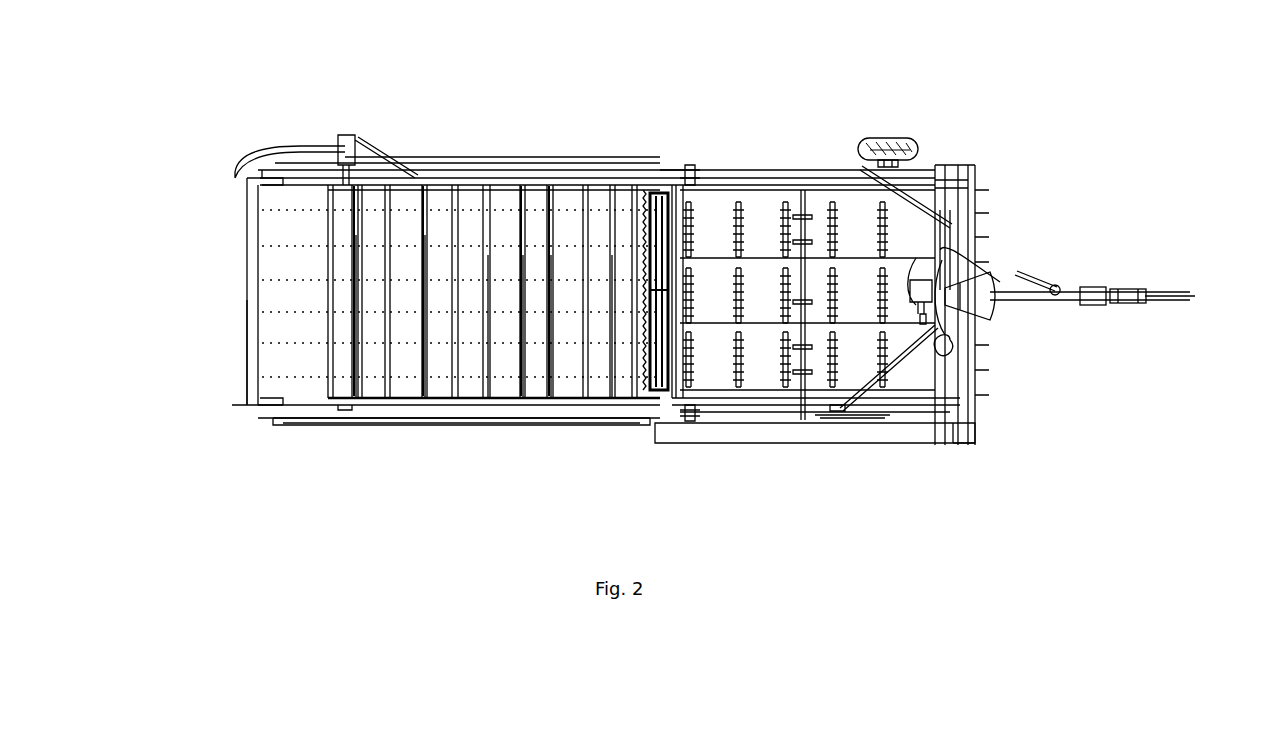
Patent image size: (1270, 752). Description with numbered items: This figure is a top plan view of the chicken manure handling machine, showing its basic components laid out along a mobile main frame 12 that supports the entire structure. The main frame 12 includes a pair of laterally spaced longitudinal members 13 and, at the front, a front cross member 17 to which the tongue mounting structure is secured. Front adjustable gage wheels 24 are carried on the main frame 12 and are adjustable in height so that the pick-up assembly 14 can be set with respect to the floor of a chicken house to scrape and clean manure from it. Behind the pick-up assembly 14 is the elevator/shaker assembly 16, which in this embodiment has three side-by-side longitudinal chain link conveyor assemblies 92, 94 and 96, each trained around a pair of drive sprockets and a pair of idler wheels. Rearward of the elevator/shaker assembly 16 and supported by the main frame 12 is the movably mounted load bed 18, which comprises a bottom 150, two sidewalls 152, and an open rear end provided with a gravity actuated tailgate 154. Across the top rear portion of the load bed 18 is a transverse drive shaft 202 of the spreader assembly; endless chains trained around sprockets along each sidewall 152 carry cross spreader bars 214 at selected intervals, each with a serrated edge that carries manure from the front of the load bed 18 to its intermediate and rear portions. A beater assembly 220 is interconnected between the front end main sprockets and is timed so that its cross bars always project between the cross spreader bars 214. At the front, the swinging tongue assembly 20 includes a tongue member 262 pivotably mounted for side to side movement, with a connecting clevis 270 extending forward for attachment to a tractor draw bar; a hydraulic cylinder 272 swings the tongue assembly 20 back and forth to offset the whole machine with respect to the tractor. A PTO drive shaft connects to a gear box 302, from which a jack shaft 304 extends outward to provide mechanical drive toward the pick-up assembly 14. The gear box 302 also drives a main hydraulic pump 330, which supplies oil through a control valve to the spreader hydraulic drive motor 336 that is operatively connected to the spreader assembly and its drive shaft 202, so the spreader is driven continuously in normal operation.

The main frame structure 12 is at (401, 281).
The longitudinal members 13 is at (797, 180).
The pick-up assembly 14 is at (993, 407).
The elevator/shaker assembly 16 is at (815, 305).
The front cross member 17 is at (945, 372).
The load bed 18 is at (510, 150).
The front swinging tongue assembly 20 is at (1106, 298).
The front adjustable gage wheels 24 is at (875, 140).
The chain link conveyor assembly 92 is at (758, 235).
The chain link conveyor assembly 94 is at (768, 305).
The chain link conveyor assembly 96 is at (772, 370).
The bottom 150 is at (282, 260).
The sidewalls 152 is at (400, 412).
The gravity actuated tailgate 154 is at (247, 306).
The transverse drive shaft 202 is at (346, 228).
The cross spreader bar 214 is at (420, 375).
The beater assembly 220 is at (657, 327).
The tongue member 262 is at (1065, 296).
The connecting clevis 270 is at (1135, 275).
The hydraulic cylinder 272 is at (1000, 270).
The gear box 302 is at (945, 265).
The jack shaft 304 is at (917, 400).
The main hydraulic pump 330 is at (950, 188).
The spreader hydraulic drive motor 336 is at (345, 150).